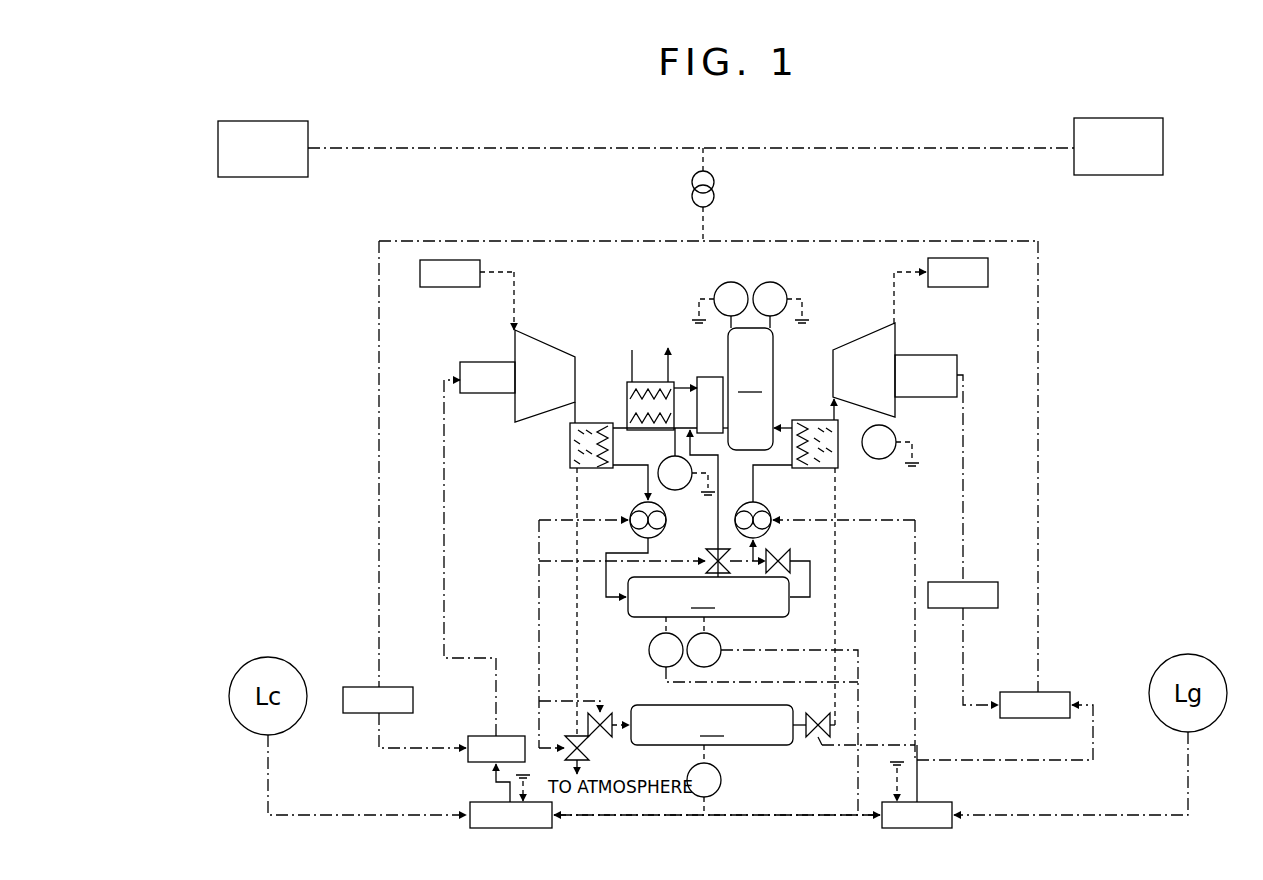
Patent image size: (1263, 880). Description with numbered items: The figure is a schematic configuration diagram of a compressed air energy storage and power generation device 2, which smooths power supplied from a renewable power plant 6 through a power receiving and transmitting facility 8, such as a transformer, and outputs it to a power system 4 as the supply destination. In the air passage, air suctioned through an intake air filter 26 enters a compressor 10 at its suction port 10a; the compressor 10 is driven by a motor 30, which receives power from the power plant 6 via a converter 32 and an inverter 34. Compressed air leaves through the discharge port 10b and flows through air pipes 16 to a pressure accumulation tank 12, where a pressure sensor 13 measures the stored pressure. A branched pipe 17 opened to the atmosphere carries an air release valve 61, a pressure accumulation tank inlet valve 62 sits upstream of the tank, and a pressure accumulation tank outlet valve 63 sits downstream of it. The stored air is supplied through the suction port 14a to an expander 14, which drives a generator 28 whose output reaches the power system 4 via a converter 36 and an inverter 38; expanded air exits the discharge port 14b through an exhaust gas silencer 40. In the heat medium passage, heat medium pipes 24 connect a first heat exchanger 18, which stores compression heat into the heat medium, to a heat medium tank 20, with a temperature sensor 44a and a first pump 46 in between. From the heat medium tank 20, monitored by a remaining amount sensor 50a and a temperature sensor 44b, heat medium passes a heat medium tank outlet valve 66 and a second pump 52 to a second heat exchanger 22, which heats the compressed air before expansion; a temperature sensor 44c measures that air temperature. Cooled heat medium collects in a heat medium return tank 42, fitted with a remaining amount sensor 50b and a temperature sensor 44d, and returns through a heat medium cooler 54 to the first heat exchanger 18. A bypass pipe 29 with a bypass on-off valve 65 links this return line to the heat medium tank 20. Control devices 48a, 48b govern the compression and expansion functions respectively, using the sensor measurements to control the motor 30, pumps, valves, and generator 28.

The compressed air energy storage and power generation device 2 is at (1085, 290).
The power system 4 is at (1074, 118).
The power plant 6 is at (310, 121).
The power receiving and transmitting facility 8 is at (715, 190).
The compressor 10 is at (515, 410).
The suction port 10a is at (512, 333).
The discharge port 10b is at (578, 398).
The pressure accumulation tank 12 is at (712, 725).
The pressure sensor 13 is at (722, 782).
The expander 14 is at (898, 336).
The suction port 14a is at (830, 395).
The discharge port 14b is at (898, 326).
The air pipes 16 is at (516, 272).
The branched pipe 17 is at (575, 743).
The first heat exchanger 18 is at (568, 452).
The heat medium tank 20 is at (708, 597).
The second heat exchanger 22 is at (838, 470).
The heat medium pipes 24 is at (636, 531).
The intake air filter 26 is at (425, 287).
The generator 28 is at (957, 367).
The bypass pipe 29 is at (720, 490).
The motor 30 is at (460, 365).
The converter 32 is at (350, 687).
The inverter 34 is at (468, 760).
The converter 36 is at (985, 580).
The inverter 38 is at (1068, 692).
The exhaust gas silencer 40 is at (990, 262).
The heat medium return tank 42 is at (750, 389).
The temperature sensor 44a is at (665, 462).
The temperature sensor 44b is at (722, 640).
The temperature sensor 44c is at (895, 432).
The temperature sensor 44d is at (775, 283).
The first pump 46 is at (637, 506).
The control device 48a is at (468, 805).
The control device 48b is at (955, 802).
The remaining amount sensor 50a is at (650, 655).
The remaining amount sensor 50b is at (717, 290).
The second pump 52 is at (770, 512).
The heat medium cooler 54 is at (677, 382).
The air release valve 61 is at (585, 750).
The pressure accumulation tank inlet valve 62 is at (607, 736).
The pressure accumulation tank outlet valve 63 is at (830, 735).
The bypass on-off valve 65 is at (712, 554).
The heat medium tank outlet valve 66 is at (779, 553).